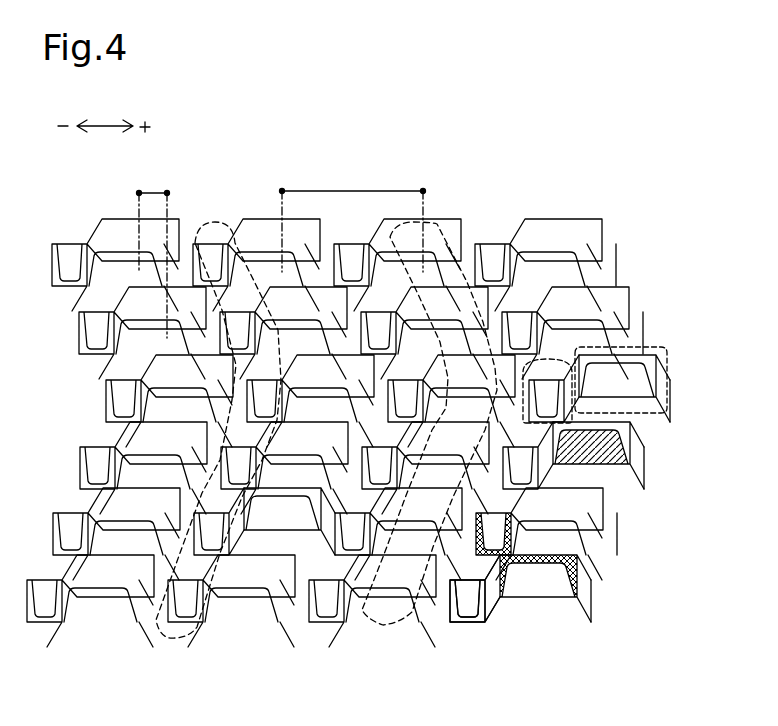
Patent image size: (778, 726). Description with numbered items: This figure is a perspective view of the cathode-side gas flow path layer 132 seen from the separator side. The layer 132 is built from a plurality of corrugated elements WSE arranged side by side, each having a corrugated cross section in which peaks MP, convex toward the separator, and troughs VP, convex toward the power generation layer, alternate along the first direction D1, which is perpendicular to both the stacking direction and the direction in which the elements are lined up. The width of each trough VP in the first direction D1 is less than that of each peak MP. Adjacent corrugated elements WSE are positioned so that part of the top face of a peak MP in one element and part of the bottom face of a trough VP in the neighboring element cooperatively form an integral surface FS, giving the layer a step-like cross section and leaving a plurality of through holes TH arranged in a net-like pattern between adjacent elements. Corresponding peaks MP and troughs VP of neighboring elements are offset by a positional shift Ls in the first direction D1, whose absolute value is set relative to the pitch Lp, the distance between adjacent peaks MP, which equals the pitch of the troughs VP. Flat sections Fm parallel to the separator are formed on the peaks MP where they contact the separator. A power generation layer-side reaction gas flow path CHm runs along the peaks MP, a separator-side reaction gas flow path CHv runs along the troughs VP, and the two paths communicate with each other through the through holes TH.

The cathode-side gas flow path layer 132 is at (573, 162).
The trough VP is at (553, 357).
The peak MP is at (664, 352).
The flat section Fm is at (597, 448).
The through hole TH is at (266, 542).
The integral surface FS is at (526, 560).
The corrugated element WSE is at (638, 552).
The separator-side reaction gas flow path CHv is at (153, 618).
The power generation layer-side reaction gas flow path CHm is at (362, 617).
The positional shift Ls is at (153, 254).
The pitch Lp is at (353, 220).
The first direction D1 is at (104, 112).